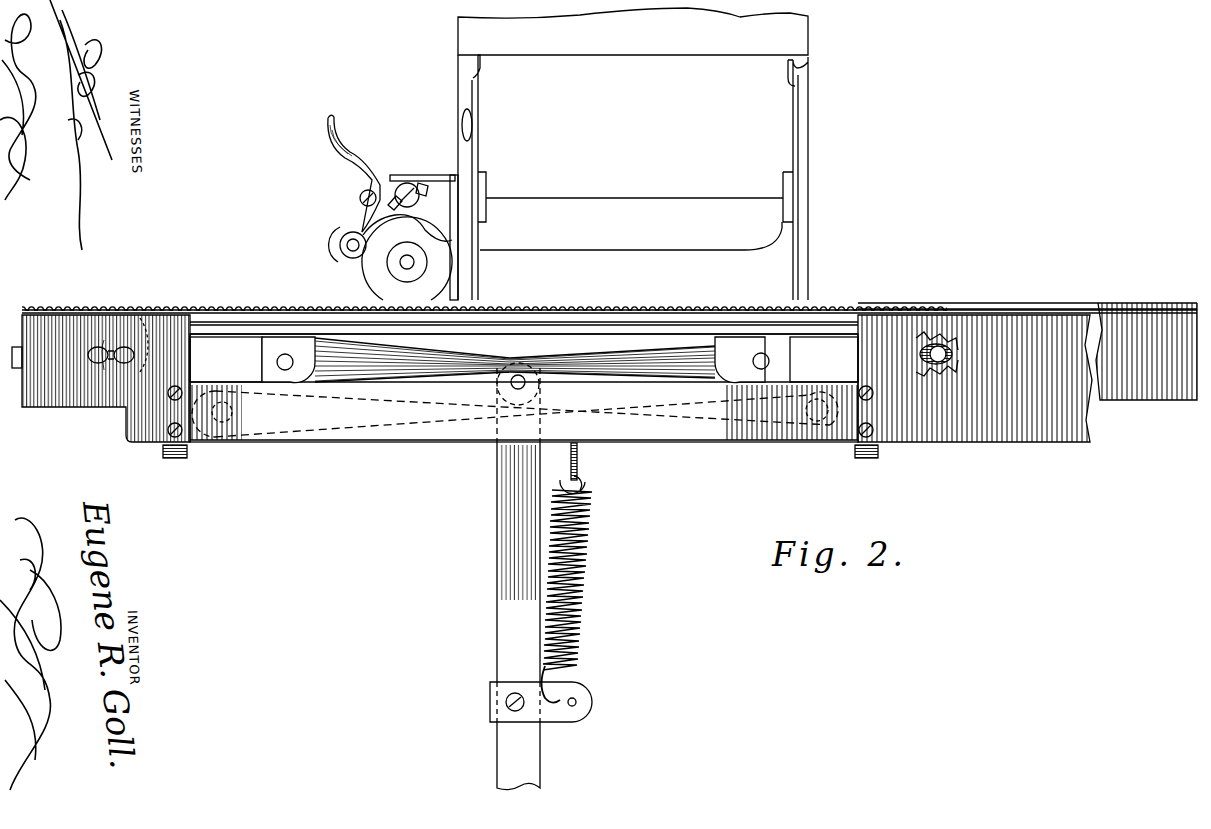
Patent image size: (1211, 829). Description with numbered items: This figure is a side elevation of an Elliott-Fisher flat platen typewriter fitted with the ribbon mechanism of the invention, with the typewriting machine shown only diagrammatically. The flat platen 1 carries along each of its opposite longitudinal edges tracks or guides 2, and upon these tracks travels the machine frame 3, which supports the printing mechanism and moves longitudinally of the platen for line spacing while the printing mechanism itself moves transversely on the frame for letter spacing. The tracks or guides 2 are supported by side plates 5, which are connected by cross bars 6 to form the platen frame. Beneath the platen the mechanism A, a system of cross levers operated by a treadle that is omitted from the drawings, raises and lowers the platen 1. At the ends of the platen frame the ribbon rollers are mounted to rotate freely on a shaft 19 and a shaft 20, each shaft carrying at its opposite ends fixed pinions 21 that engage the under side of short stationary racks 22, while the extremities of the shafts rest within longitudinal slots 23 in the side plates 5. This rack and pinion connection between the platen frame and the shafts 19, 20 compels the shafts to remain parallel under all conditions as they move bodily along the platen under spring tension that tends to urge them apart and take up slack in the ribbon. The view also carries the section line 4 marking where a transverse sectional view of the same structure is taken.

The flat platen 1 is at (540, 327).
The tracks or guides 2 is at (232, 306).
The machine frame 3 is at (637, 202).
The section line 4— 4 is at (975, 505).
The side plates 5 is at (1050, 440).
The cross bars 6 is at (188, 455).
The shaft 19 is at (126, 362).
The shaft 20 is at (937, 345).
The fixed pinions 21 is at (112, 346).
The short stationary racks 22 is at (146, 320).
The longitudinal slots 23 is at (105, 362).
The platen raising and lowering mechanism A is at (510, 594).